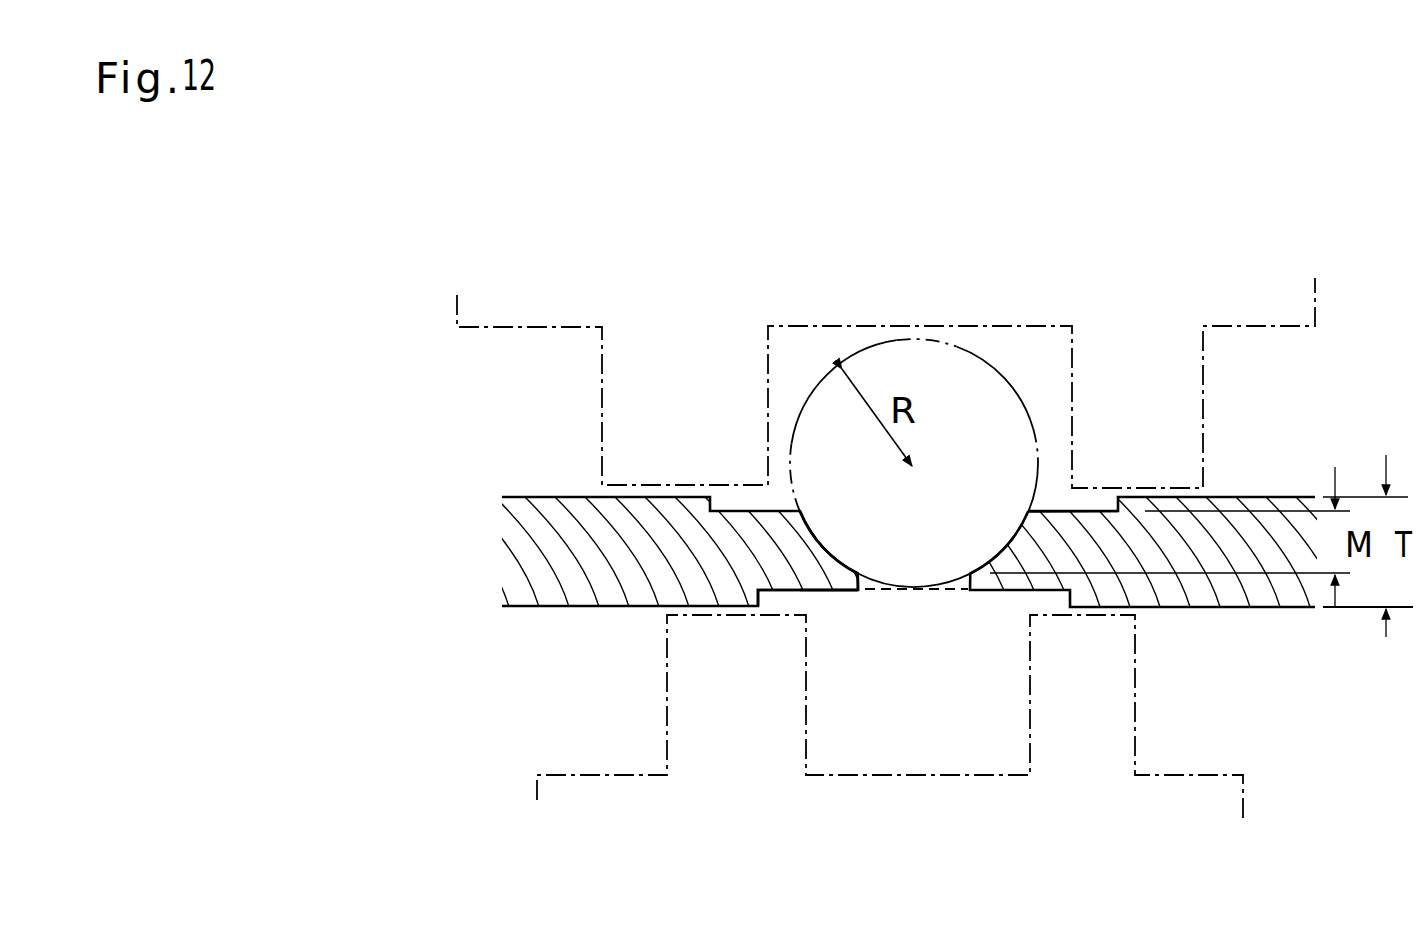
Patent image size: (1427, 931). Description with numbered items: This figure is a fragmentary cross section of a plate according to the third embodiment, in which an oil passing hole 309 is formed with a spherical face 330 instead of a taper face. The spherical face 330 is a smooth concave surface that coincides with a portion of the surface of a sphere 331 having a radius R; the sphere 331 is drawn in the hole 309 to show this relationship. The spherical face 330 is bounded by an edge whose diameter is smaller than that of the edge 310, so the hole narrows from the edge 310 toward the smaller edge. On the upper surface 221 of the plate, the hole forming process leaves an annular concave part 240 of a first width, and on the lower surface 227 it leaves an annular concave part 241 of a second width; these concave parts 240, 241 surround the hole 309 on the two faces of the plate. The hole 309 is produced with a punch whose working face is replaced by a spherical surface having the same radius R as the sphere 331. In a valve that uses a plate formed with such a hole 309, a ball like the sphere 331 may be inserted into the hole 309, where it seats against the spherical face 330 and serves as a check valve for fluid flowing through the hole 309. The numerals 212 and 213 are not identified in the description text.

The edge 310 is at (802, 513).
The sphere 331 is at (977, 357).
The concave part 240 is at (1072, 511).
The upper surface 221 is at (1278, 497).
The spherical face 330 is at (818, 542).
The oil passing hole 309 is at (947, 540).
The edge portion 212 is at (860, 578).
The groove 213 is at (862, 581).
The concave part 241 is at (832, 590).
The lower surface 227 is at (1240, 607).